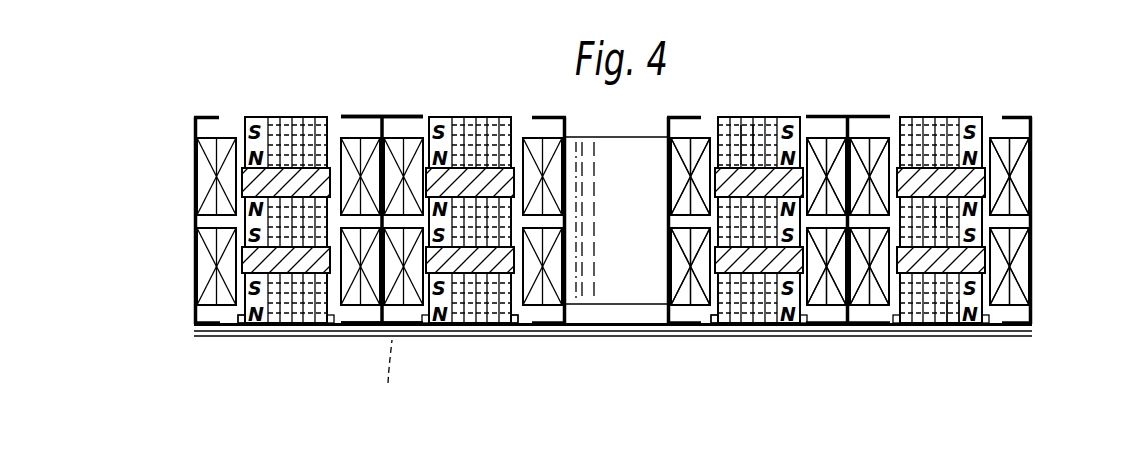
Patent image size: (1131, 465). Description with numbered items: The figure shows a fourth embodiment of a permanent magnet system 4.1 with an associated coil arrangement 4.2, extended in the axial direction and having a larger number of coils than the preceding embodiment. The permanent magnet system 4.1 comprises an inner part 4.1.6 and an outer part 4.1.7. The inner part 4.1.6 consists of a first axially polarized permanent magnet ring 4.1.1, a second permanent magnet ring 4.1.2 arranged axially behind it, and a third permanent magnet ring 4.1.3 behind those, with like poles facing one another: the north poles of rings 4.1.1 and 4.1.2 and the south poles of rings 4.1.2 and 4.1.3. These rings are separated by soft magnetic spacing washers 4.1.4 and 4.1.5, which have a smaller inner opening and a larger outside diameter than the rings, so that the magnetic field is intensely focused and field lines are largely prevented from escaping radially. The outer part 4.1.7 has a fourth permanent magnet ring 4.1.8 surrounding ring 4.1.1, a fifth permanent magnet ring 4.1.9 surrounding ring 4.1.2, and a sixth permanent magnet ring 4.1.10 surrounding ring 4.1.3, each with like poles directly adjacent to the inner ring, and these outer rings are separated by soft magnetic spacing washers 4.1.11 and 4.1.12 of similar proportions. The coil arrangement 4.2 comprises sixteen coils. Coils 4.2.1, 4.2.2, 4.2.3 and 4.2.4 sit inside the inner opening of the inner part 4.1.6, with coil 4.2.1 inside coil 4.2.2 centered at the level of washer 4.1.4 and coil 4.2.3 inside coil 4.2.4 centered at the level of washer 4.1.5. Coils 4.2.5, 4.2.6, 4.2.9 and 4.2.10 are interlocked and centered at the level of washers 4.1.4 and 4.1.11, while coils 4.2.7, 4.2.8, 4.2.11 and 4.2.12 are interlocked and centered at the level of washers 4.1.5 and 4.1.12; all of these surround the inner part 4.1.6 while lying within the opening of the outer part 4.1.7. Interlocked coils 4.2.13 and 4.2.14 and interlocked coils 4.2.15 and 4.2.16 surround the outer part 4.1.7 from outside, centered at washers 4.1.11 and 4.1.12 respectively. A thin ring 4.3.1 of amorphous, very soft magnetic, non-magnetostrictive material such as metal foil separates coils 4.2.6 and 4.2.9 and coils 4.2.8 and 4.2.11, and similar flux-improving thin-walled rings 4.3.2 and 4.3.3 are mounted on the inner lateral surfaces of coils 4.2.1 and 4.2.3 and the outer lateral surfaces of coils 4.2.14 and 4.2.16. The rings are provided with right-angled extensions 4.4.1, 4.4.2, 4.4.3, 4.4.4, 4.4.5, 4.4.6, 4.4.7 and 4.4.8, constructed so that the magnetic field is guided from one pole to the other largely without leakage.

The permanent magnet system 4.1 is at (310, 331).
The first axially polarized permanent magnet ring 4.1.1 is at (757, 175).
The second permanent magnet ring 4.1.2 is at (725, 118).
The third permanent magnet ring 4.1.3 is at (733, 325).
The soft magnetic spacing washer 4.1.4 is at (770, 158).
The soft magnetic spacing washer 4.1.5 is at (748, 273).
The inner part 4.1.6 is at (460, 327).
The outer part 4.1.7 is at (293, 325).
The fourth permanent magnet ring 4.1.8 is at (965, 115).
The fifth permanent magnet ring 4.1.9 is at (940, 218).
The sixth permanent magnet ring 4.1.10 is at (951, 314).
The soft magnetic spacing washer 4.1.11 is at (910, 178).
The soft magnetic spacing washer 4.1.12 is at (922, 273).
The coil arrangement 4.2 is at (230, 325).
The coil 4.2.1 is at (683, 138).
The coil 4.2.2 is at (711, 140).
The coil 4.2.3 is at (685, 322).
The coil 4.2.4 is at (697, 330).
The coil 4.2.5 is at (821, 140).
The coil 4.2.6 is at (836, 140).
The coil 4.2.7 is at (820, 330).
The coil 4.2.8 is at (828, 330).
The coil 4.2.9 is at (868, 140).
The coil 4.2.10 is at (890, 138).
The coil 4.2.11 is at (873, 330).
The coil 4.2.12 is at (893, 327).
The coil 4.2.13 is at (1003, 138).
The coil 4.2.14 is at (1032, 165).
The coil 4.2.15 is at (1005, 330).
The coil 4.2.16 is at (1033, 328).
The thin ring 4.3.1 is at (382, 116).
The thin-walled ring 4.3.2 is at (566, 137).
The thin-walled ring 4.3.3 is at (197, 190).
The right-angled extension 4.4.1 is at (547, 117).
The right-angled extension 4.4.2 is at (552, 330).
The right-angled extension 4.4.3 is at (398, 116).
The right-angled extension 4.4.4 is at (362, 116).
The right-angled extension 4.4.5 is at (402, 325).
The right-angled extension 4.4.6 is at (352, 330).
The right-angled extension 4.4.7 is at (212, 116).
The right-angled extension 4.4.8 is at (222, 324).